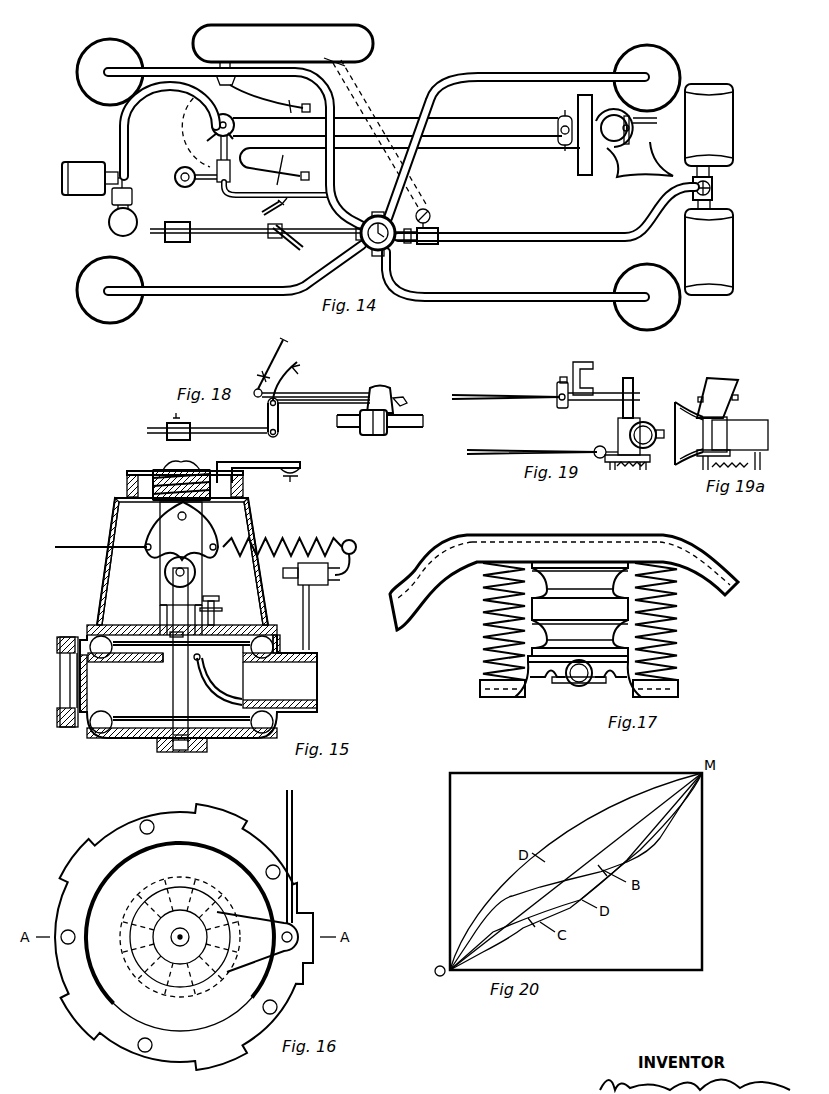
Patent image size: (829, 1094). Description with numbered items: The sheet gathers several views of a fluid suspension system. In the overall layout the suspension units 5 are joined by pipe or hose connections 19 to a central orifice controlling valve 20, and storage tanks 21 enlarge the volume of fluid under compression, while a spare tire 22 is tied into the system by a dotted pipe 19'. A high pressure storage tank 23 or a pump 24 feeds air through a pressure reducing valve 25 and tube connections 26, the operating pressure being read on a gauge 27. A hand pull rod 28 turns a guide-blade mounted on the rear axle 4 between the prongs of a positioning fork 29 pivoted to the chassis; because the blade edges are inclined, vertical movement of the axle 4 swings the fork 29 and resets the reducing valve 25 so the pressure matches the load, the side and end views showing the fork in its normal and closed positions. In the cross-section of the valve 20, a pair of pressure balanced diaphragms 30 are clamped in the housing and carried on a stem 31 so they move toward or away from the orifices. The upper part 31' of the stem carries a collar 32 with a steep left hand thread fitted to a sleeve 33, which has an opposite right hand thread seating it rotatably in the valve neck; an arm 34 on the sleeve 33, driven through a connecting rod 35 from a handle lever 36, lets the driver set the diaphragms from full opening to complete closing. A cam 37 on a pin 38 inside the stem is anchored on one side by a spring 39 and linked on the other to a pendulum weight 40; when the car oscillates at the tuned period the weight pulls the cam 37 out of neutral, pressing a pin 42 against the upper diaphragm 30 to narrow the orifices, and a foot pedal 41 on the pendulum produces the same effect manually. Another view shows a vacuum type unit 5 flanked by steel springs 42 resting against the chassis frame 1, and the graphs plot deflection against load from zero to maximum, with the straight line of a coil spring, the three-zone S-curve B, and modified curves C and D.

In FIG. 17, the chassis frame 1 is at (556, 536).
In FIG. 14, the rear axle 4 is at (655, 145).
In FIG. 17, the rear axle 4 is at (573, 689).
In FIG. 14, the suspension unit 5 is at (100, 92).
In FIG. 17, the suspension unit 5 is at (572, 580).
In FIG. 14, the pipe or hose connection 19 is at (401, 176).
In FIG. 18, the pipe or hose connection 19 is at (381, 431).
In FIG. 14, the pipe 19' is at (375, 132).
In FIG. 14, the orifice controlling valve 20 is at (398, 248).
In FIG. 18, the orifice controlling valve 20 is at (373, 430).
In FIG. 15, the orifice controlling valve 20 is at (100, 590).
In FIG. 14, the storage tank 21 is at (709, 189).
In FIG. 14, the spare tire 22 is at (373, 42).
In FIG. 14, the high pressure storage tank 23 is at (82, 170).
In FIG. 14, the pump 24 is at (108, 222).
In FIG. 14, the pressure reducing valve 25 is at (212, 127).
In FIG. 14, the tube connection 26 is at (244, 197).
In FIG. 14, the gauge 27 is at (188, 188).
In FIG. 14, the hand pull rod 28 is at (280, 176).
In FIG. 14, the positioning fork 29 is at (593, 143).
In FIG. 15, the pressure balanced diaphragm 30 is at (120, 650).
In FIG. 15, the stem 31 is at (169, 712).
In FIG. 15, the upper part of stem 31' is at (202, 618).
In FIG. 15, the collar 32 is at (208, 500).
In FIG. 15, the sleeve 33 is at (150, 475).
In FIG. 15, the arm 34 is at (257, 473).
In FIG. 16, the arm 34 is at (262, 960).
In FIG. 14, the connecting rod 35 is at (300, 224).
In FIG. 18, the connecting rod 35 is at (322, 398).
In FIG. 16, the connecting rod 35 is at (293, 832).
In FIG. 14, the handle lever 36 is at (268, 206).
In FIG. 18, the handle lever 36 is at (276, 345).
In FIG. 15, the cam 37 is at (167, 530).
In FIG. 15, the pin 38 is at (185, 520).
In FIG. 15, the spring 39 is at (291, 543).
In FIG. 14, the pendulum weight 40 is at (178, 240).
In FIG. 18, the pendulum weight 40 is at (193, 428).
In FIG. 18, the foot pedal 41 is at (299, 367).
In FIG. 15, the pin 42 is at (177, 588).
In FIG. 17, the pin 42 is at (485, 620).